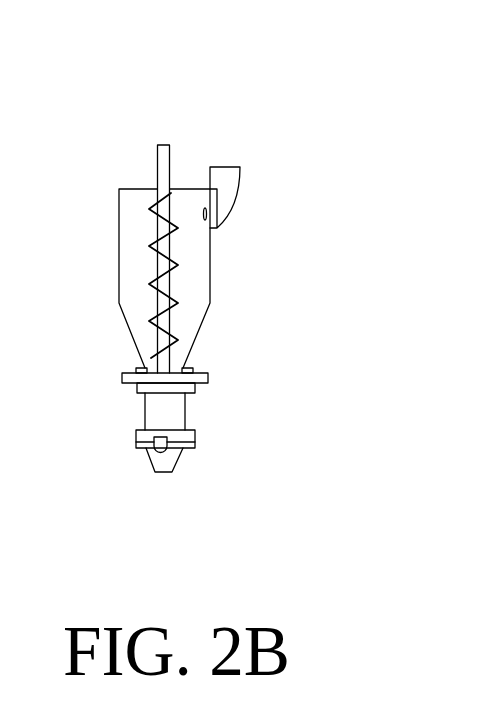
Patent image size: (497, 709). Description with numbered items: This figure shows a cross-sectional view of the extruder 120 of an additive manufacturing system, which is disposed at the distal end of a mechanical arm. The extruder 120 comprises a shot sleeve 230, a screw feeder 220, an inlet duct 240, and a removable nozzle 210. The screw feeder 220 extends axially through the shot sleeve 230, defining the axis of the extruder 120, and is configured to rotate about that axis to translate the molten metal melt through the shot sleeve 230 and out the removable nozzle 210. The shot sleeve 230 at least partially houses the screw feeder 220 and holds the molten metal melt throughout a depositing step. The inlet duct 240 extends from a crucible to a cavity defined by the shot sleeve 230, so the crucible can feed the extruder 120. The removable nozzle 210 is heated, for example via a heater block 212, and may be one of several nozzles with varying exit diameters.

The extruder 120 is at (292, 139).
The shot sleeve 230 is at (119, 242).
The screw feeder 220 is at (160, 353).
The inlet duct 240 is at (227, 178).
The heater block 212 is at (157, 412).
The removable nozzle 210 is at (160, 460).